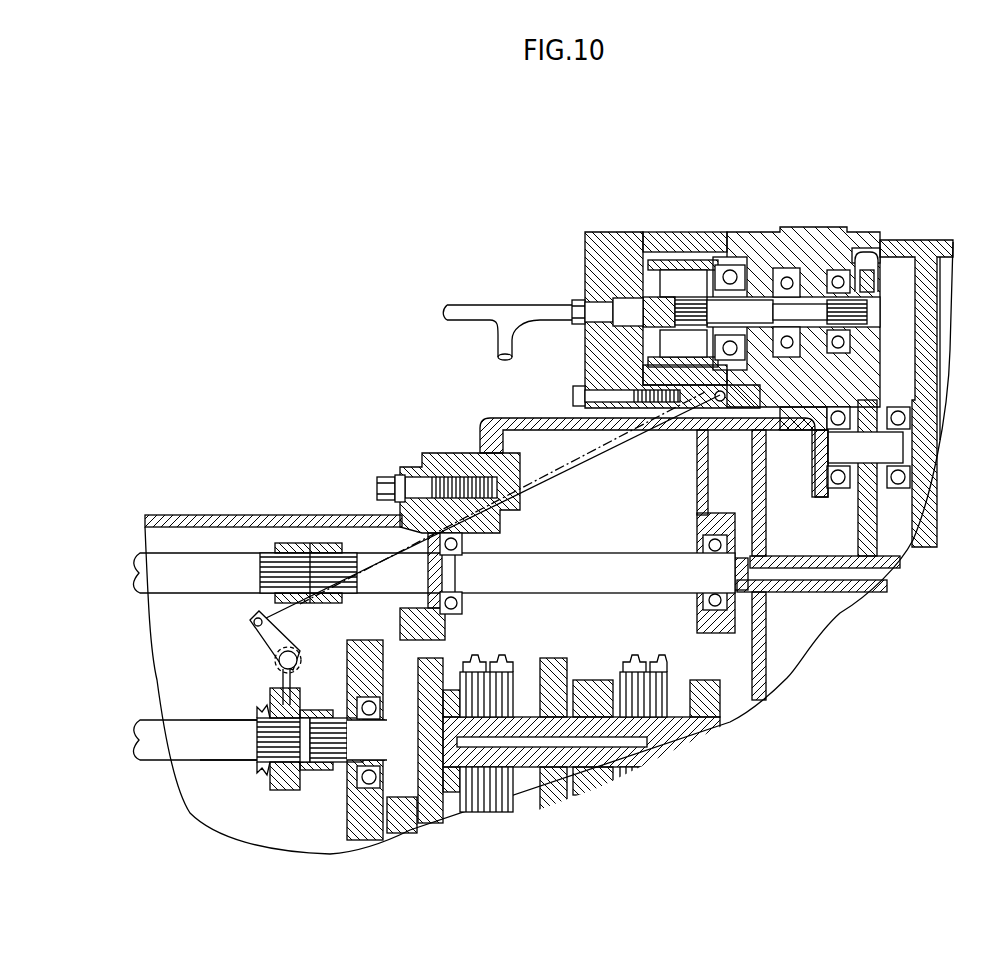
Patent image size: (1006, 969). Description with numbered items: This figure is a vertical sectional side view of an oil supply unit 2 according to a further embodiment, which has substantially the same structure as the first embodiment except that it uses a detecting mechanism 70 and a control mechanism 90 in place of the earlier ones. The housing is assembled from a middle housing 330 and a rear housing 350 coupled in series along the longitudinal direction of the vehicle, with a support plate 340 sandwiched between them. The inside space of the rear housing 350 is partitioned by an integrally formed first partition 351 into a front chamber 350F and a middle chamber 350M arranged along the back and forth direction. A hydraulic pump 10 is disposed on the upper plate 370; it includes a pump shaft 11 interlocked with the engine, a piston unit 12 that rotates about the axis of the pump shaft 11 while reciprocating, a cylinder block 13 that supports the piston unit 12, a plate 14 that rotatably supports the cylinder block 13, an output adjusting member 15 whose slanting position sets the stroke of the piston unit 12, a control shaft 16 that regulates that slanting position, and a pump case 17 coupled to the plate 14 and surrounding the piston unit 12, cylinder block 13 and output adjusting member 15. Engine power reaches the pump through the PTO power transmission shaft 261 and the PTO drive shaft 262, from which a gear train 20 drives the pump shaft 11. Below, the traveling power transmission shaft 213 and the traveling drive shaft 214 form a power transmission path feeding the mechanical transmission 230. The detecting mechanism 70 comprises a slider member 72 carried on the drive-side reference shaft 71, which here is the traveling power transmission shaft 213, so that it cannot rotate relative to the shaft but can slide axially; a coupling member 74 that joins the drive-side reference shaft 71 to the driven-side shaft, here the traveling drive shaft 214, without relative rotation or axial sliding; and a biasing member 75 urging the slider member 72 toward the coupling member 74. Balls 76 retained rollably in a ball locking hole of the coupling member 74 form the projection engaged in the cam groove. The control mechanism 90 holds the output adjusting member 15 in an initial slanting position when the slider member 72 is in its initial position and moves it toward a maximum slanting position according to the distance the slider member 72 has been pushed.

The hydraulic pump 10 is at (835, 181).
The plate 14 is at (604, 250).
The cylinder block 13 is at (648, 252).
The piston unit 12 is at (678, 272).
The control shaft 16 is at (708, 298).
The output adjusting member 15 is at (733, 262).
The pump shaft 11 is at (748, 312).
The pump case 17 is at (797, 240).
The upper plate 370 is at (908, 248).
The oil supply unit 2 is at (510, 275).
The gear train 20 is at (843, 512).
The rear housing 350 is at (470, 453).
The front chamber 350F is at (668, 634).
The middle chamber 350M is at (824, 622).
The first partition 351 is at (763, 657).
The support plate 340 is at (425, 453).
The middle housing 330 is at (237, 513).
The PTO power transmission shaft 261 is at (212, 583).
The PTO drive shaft 262 is at (602, 584).
The control mechanism 90 is at (552, 497).
The slider member 72 is at (273, 697).
The drive-side reference shaft 71 is at (218, 730).
The traveling power transmission shaft 213 is at (191, 754).
The detecting mechanism 70 is at (250, 780).
The biasing member 75 is at (262, 775).
The balls 76 is at (277, 780).
The coupling member 74 is at (307, 773).
The traveling drive shaft 214 is at (407, 830).
The mechanical transmission 230 is at (567, 655).